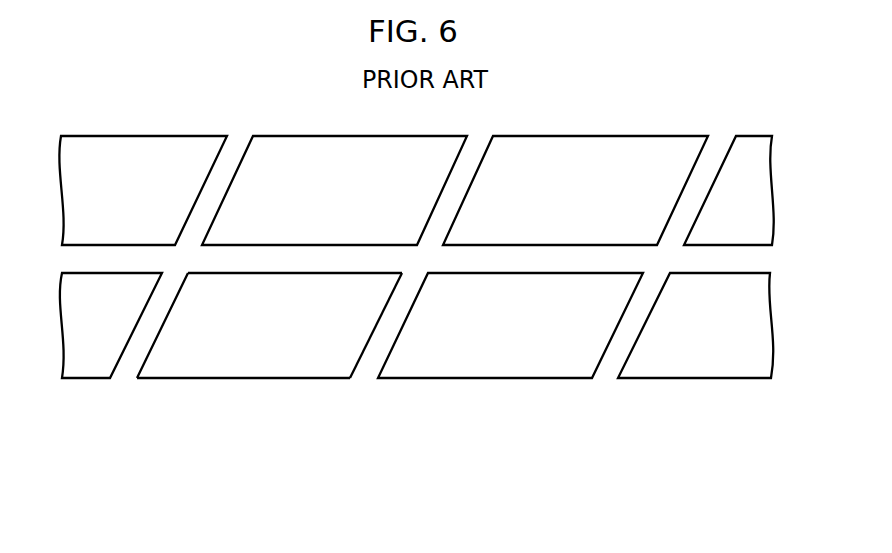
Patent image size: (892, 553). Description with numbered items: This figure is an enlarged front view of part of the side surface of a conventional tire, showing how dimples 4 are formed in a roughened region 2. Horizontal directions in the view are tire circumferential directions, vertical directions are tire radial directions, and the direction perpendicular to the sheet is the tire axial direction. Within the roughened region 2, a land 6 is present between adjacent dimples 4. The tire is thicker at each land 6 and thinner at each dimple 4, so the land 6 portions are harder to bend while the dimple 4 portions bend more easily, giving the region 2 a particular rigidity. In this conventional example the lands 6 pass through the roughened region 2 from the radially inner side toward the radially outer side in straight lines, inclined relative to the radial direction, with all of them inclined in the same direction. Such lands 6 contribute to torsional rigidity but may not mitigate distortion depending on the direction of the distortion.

The roughened region 2 is at (416, 285).
The dimple 4 is at (490, 350).
The land 6 is at (368, 365).